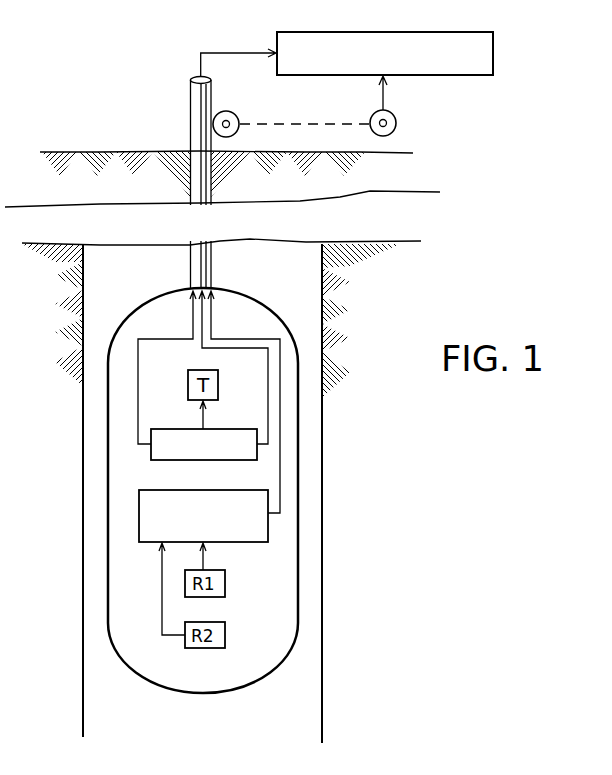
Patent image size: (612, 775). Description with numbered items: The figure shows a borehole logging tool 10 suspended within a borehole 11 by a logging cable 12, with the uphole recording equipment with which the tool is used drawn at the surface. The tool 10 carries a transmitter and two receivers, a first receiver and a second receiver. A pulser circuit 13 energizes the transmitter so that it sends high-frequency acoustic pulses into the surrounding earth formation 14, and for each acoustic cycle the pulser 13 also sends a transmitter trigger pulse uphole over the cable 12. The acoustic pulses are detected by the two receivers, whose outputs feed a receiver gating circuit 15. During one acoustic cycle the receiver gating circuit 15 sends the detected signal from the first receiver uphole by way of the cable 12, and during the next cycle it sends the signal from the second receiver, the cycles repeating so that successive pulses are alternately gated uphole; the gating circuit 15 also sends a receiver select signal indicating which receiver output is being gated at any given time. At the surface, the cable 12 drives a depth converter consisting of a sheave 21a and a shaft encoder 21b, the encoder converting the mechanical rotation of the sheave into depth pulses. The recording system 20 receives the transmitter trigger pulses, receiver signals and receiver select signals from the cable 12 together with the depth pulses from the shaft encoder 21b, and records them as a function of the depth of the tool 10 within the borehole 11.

The borehole logging tool 10 is at (248, 297).
The borehole 11 is at (132, 277).
The logging cable 12 is at (189, 108).
The pulser circuit 13 is at (224, 428).
The earth formation 14 is at (421, 455).
The receiver gating circuit 15 is at (227, 545).
The recording system 20 is at (493, 57).
The sheave 21a is at (238, 115).
The shaft encoder 21b is at (396, 118).